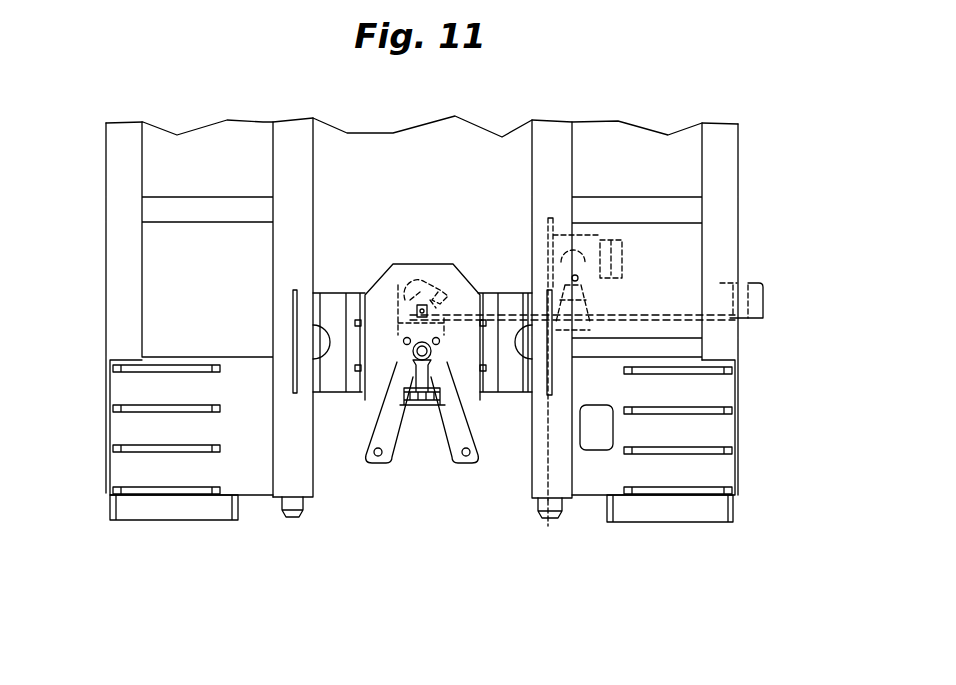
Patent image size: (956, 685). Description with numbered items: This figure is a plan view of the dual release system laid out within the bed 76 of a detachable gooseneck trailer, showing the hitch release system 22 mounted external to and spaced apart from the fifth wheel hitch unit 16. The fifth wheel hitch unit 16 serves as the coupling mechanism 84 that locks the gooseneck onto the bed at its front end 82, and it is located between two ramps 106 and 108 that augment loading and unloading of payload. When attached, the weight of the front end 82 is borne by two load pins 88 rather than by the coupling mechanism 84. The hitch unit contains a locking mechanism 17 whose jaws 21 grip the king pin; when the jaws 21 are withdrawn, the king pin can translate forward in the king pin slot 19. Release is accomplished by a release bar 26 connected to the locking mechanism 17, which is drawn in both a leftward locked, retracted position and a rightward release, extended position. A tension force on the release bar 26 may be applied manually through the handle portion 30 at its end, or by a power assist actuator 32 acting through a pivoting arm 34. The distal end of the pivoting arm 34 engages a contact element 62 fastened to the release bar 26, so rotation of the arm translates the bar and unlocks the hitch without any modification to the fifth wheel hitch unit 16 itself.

The hitch release system 22 is at (325, 187).
The coupling mechanism 84 is at (409, 245).
The fifth wheel hitch unit 16 is at (421, 332).
The bed 76 is at (287, 243).
The power assist actuator 32 is at (620, 238).
The release bar 26 is at (682, 313).
The handle portion 30 is at (750, 292).
The pivoting arm 34 is at (588, 287).
The contact element 62 is at (583, 323).
The ramp 106 is at (688, 433).
The ramp 108 is at (129, 427).
The load pins 88 is at (290, 503).
The jaws 21 is at (407, 362).
The locking mechanism 17 is at (424, 400).
The king pin slot 19 is at (452, 462).
The front end 82 is at (670, 522).